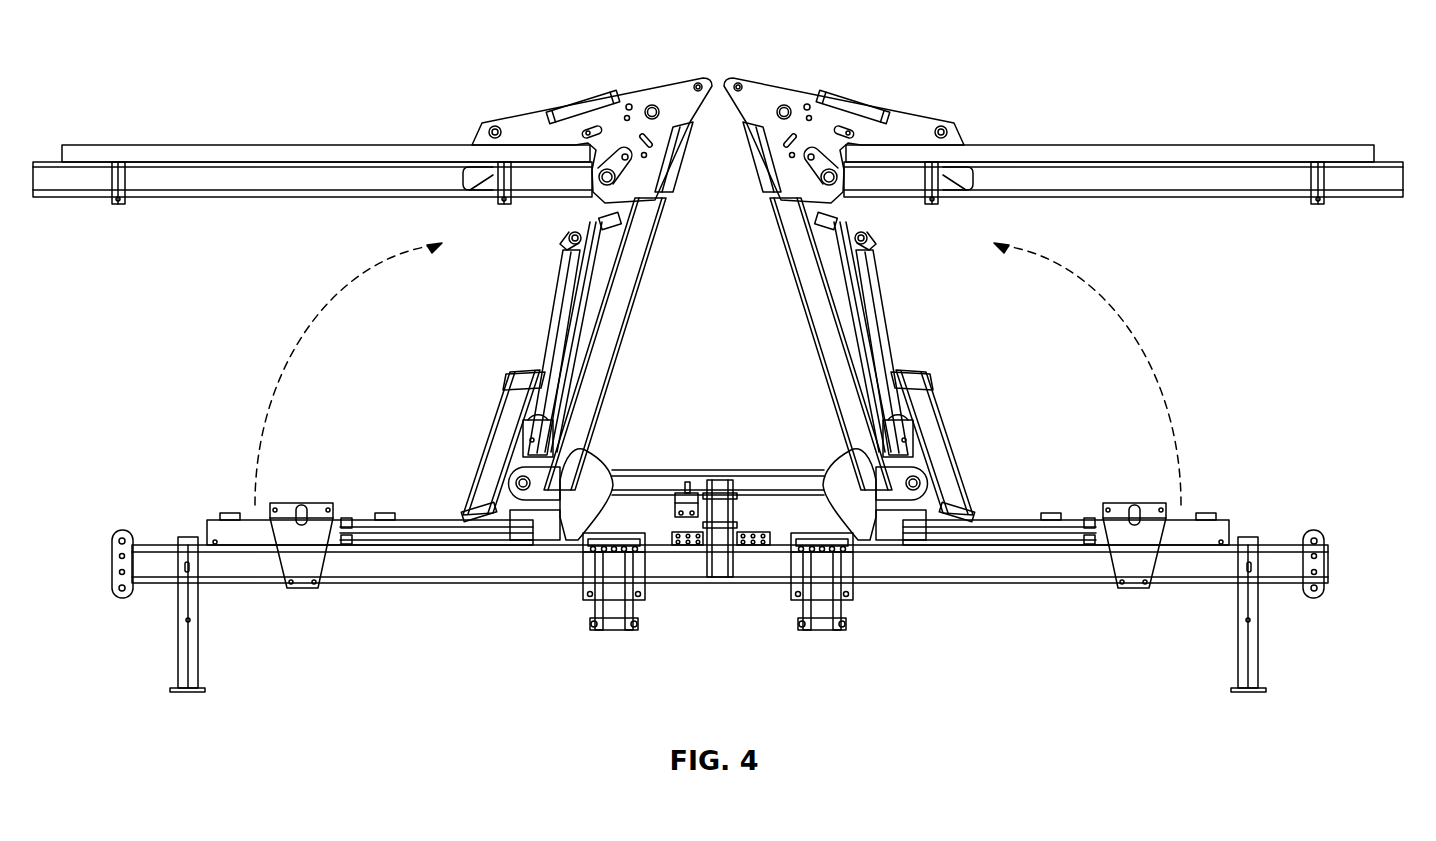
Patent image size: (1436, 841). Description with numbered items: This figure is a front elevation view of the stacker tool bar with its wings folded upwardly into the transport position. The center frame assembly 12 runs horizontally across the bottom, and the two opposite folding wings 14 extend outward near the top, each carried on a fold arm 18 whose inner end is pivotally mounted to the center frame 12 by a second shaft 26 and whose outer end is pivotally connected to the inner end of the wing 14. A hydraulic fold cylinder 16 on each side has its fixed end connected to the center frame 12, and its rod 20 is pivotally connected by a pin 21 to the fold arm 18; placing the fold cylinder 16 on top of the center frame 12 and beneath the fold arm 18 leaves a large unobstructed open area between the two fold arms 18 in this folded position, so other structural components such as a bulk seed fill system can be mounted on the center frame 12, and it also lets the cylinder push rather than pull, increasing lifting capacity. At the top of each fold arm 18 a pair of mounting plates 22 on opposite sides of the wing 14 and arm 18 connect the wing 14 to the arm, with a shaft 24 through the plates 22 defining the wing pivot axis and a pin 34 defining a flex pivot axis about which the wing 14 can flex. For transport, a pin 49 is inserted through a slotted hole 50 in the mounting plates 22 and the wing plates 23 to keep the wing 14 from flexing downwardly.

The center frame assembly 12 is at (757, 480).
The folding wing 14 is at (196, 181).
The hydraulic fold cylinder 16 is at (506, 398).
The fold arm 18 is at (565, 306).
The rod 20 is at (546, 318).
The pin 21 is at (570, 241).
The mounting plates 22 is at (690, 84).
The wing plates 23 is at (512, 131).
The shaft 24 is at (651, 106).
The second shaft 26 is at (508, 478).
The pin 34 is at (604, 186).
The pin 49 is at (566, 124).
The slotted hole 50 is at (593, 128).